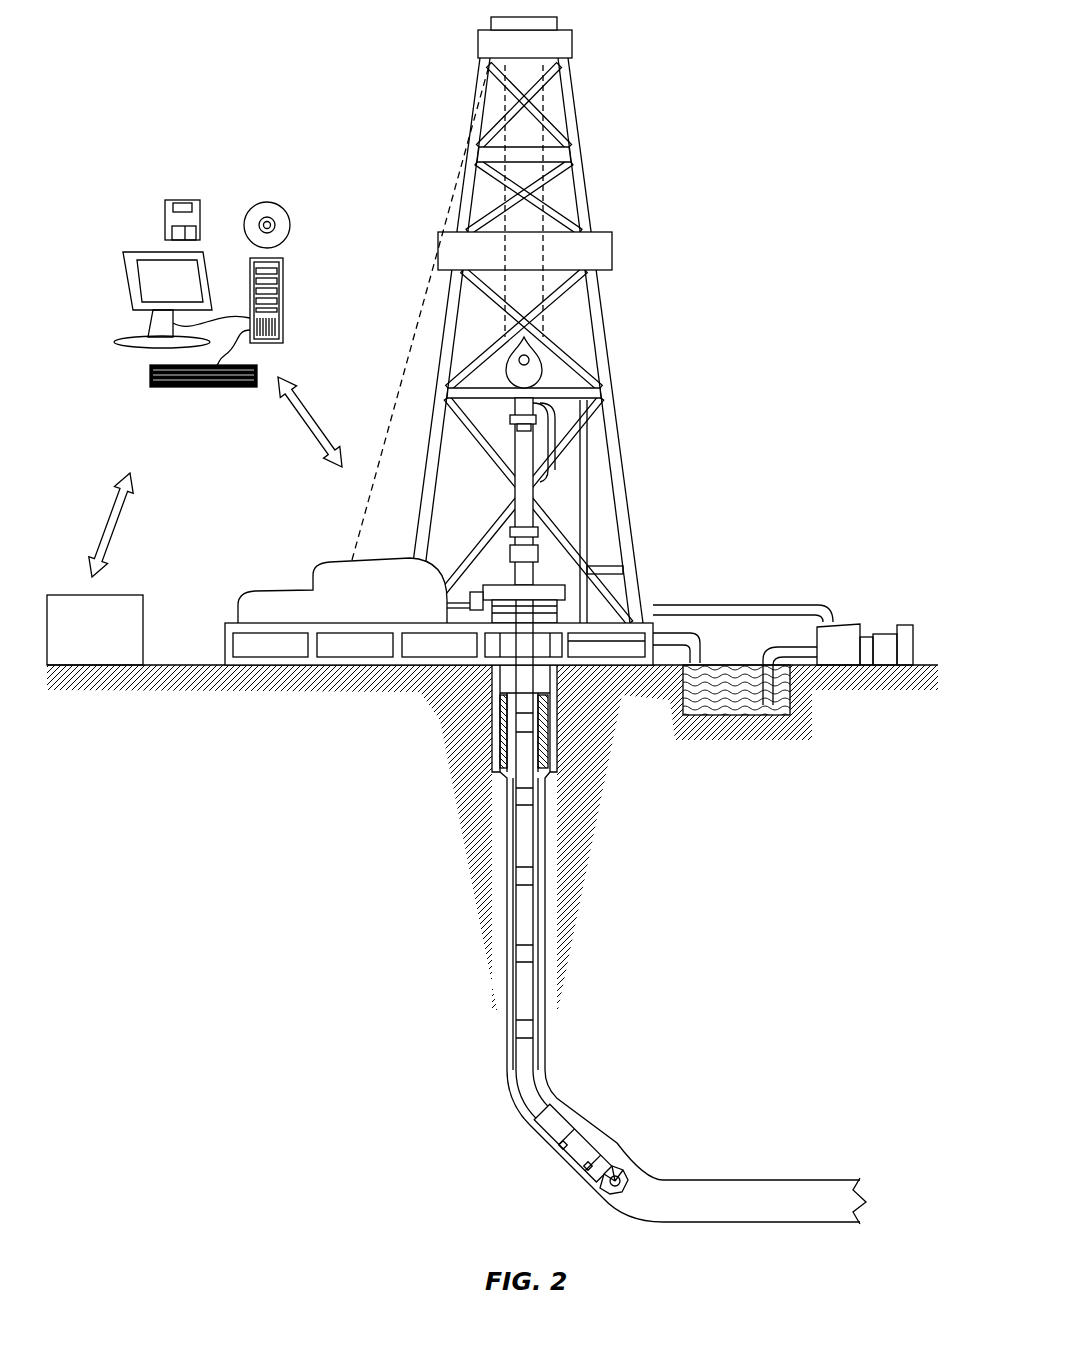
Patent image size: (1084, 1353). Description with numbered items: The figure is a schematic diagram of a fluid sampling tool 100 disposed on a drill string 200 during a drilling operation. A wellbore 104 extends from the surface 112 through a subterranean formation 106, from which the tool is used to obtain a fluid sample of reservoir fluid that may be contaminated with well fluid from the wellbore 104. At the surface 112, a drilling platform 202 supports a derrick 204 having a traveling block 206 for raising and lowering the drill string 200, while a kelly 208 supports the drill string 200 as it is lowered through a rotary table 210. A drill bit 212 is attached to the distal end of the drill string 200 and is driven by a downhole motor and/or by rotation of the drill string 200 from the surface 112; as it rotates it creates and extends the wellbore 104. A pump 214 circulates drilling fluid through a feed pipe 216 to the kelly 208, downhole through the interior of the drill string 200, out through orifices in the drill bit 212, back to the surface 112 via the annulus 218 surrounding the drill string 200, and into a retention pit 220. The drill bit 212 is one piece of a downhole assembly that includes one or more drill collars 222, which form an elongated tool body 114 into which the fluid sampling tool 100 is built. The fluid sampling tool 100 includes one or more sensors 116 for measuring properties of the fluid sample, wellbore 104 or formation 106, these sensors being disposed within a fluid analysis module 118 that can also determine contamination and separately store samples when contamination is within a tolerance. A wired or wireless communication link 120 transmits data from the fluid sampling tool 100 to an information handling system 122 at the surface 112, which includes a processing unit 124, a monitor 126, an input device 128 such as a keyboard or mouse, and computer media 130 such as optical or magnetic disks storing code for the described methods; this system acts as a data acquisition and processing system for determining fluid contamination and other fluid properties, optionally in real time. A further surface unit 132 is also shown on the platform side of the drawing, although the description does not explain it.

The fluid sampling tool 100 is at (526, 1135).
The wellbore 104 is at (545, 872).
The subterranean formation 106 is at (771, 960).
The surface 112 is at (923, 665).
The tool body 114 is at (570, 1137).
The sensors 116 is at (572, 1165).
The fluid analysis module 118 is at (545, 1140).
The communication link 120 is at (297, 430).
The information handling system 122 is at (127, 186).
The processing unit 124 is at (287, 270).
The monitor 126 is at (125, 290).
The input device 128 is at (158, 388).
The computer media 130 is at (263, 205).
The remote unit 132 is at (113, 650).
The drill string 200 is at (533, 853).
The drilling platform 202 is at (225, 647).
The derrick 204 is at (585, 172).
The traveling block 206 is at (547, 365).
The kelly 208 is at (525, 448).
The rotary table 210 is at (563, 585).
The drill bit 212 is at (623, 1163).
The pump 214 is at (843, 622).
The feed pipe 216 is at (763, 603).
The annulus 218 is at (505, 873).
The retention pit 220 is at (732, 700).
The drill collars 222 is at (573, 1137).